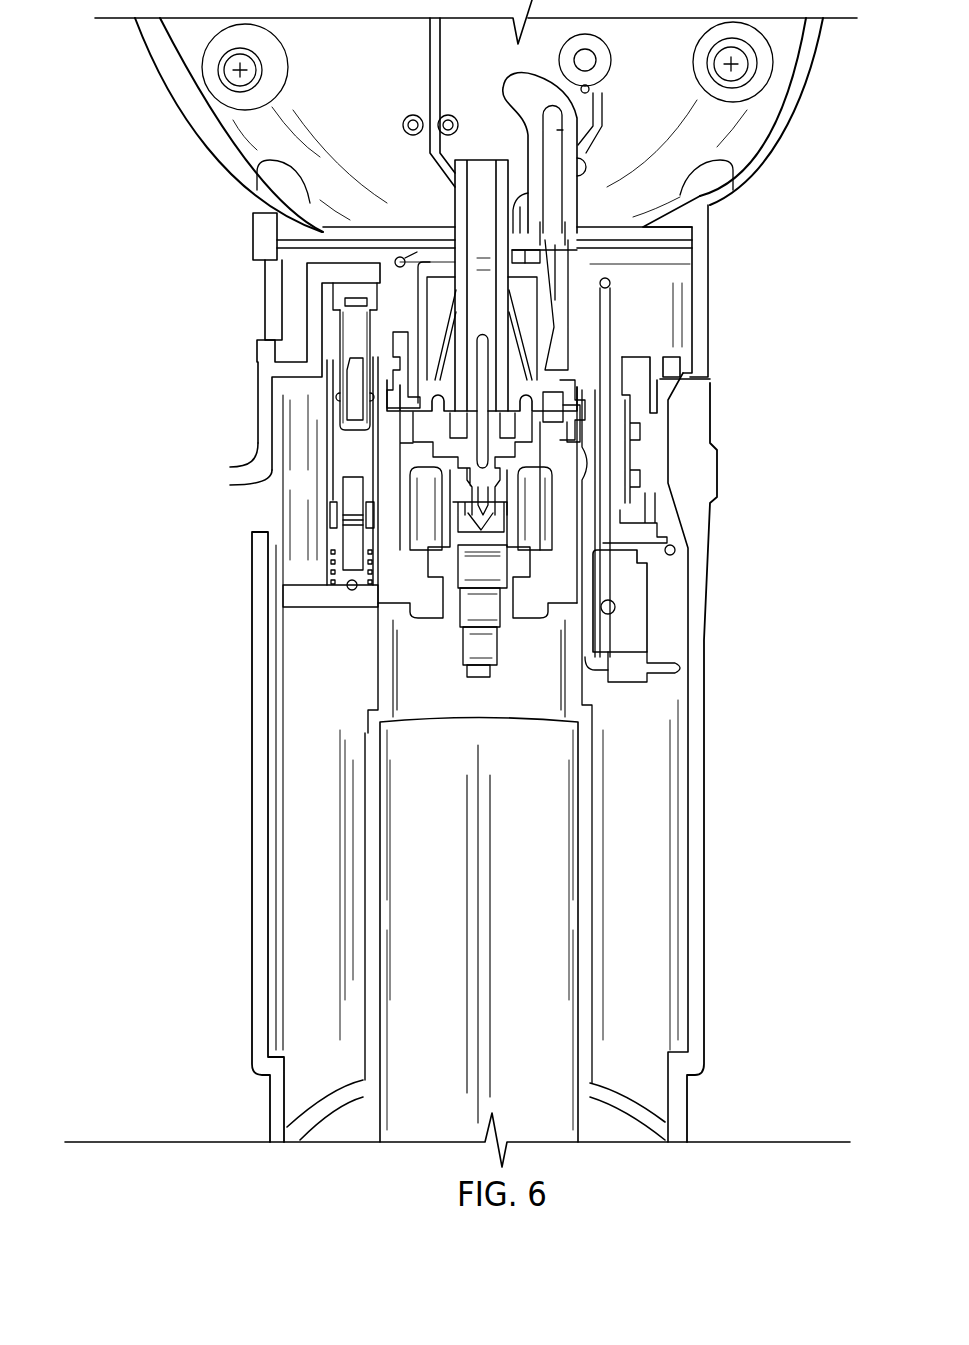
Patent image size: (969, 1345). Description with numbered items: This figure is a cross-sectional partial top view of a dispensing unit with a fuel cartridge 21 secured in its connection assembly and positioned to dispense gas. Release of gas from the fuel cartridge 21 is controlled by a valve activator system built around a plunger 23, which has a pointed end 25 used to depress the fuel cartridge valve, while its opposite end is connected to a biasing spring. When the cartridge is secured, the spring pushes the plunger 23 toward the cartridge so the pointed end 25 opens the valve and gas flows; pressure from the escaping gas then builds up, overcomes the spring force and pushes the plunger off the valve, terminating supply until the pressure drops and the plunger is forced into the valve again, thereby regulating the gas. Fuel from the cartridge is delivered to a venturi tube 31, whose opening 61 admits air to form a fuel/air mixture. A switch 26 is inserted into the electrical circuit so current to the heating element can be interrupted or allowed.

The fuel cartridge 21 is at (585, 995).
The plunger 23 is at (497, 450).
The pointed end 25 is at (452, 512).
The switch 26 is at (628, 628).
The venturi tube 31 is at (558, 272).
The opening 61 is at (578, 377).